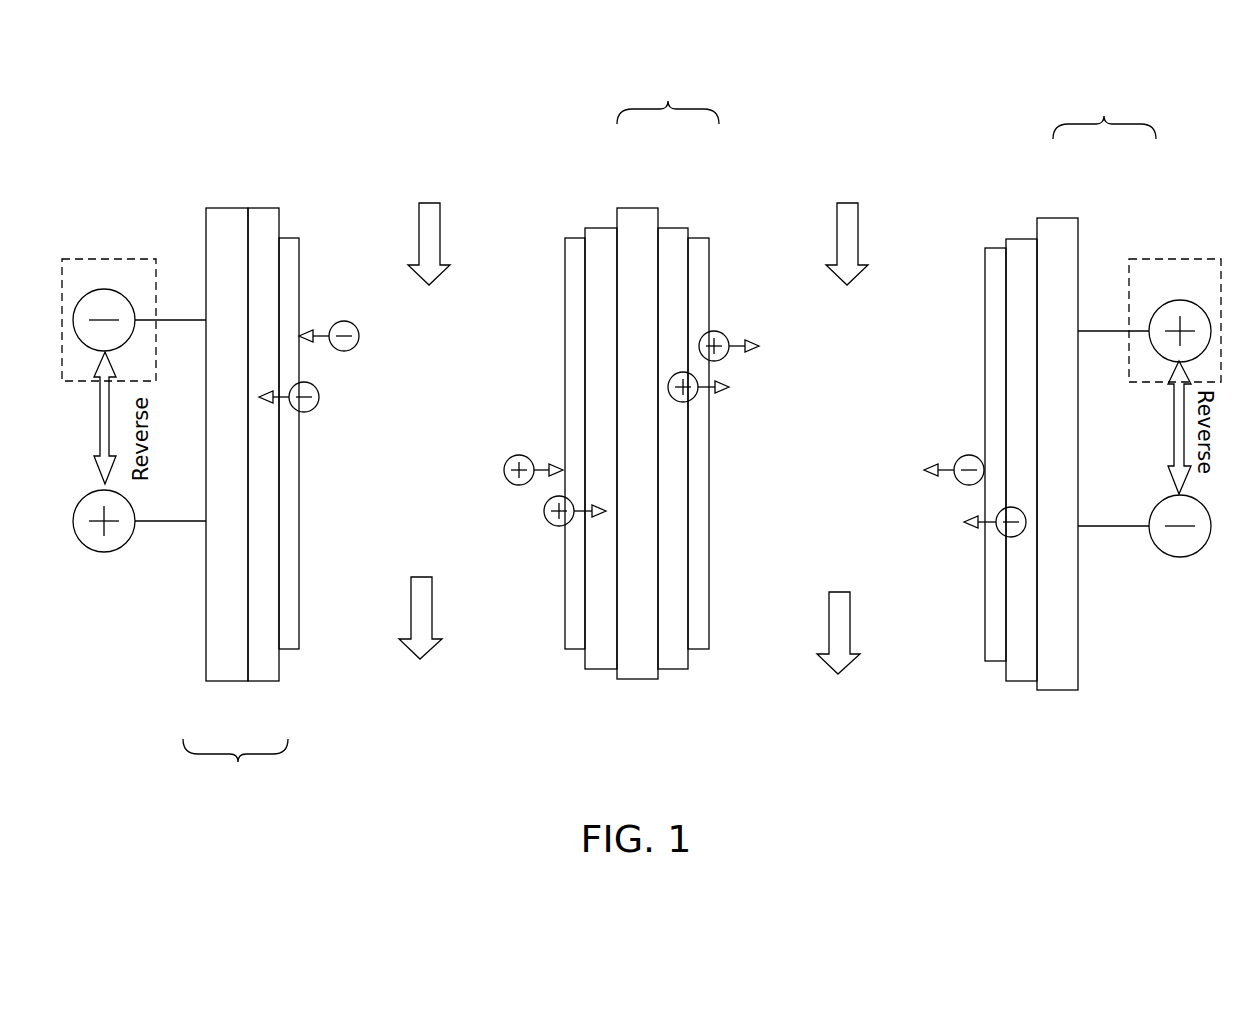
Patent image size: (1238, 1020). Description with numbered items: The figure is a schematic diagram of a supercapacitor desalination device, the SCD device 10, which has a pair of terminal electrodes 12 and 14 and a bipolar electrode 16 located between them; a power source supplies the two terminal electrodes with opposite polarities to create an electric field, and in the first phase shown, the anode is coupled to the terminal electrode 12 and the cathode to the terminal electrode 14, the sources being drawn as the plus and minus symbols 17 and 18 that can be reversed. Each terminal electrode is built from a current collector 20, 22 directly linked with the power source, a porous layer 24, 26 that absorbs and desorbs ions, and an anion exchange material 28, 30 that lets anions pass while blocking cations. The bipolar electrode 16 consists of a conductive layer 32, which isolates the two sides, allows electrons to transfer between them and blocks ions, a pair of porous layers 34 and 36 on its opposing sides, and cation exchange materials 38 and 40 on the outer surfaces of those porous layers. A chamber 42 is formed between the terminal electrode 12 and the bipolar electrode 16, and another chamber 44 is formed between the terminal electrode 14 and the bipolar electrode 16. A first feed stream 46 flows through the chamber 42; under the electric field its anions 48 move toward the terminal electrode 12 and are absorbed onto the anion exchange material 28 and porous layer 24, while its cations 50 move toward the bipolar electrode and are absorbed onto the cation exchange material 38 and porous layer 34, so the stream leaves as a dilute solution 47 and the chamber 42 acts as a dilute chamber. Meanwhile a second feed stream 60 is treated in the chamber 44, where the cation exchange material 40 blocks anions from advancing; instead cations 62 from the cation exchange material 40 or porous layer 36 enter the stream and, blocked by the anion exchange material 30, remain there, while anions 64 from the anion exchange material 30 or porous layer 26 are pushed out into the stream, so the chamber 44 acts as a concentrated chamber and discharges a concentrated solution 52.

The SCD device 10 is at (141, 53).
The terminal electrode 12 is at (235, 768).
The terminal electrode 14 is at (1104, 110).
The bipolar electrode 16 is at (668, 95).
The first power source 17 is at (100, 544).
The second power source 18 is at (1183, 549).
The current collector 20 is at (218, 658).
The current collector 22 is at (1053, 221).
The porous layer 24 is at (258, 658).
The porous layer 26 is at (1010, 241).
The anion exchange material 28 is at (283, 228).
The anion exchange material 30 is at (985, 644).
The conductive layer 32 is at (635, 213).
The porous layer 34 is at (590, 228).
The porous layer 36 is at (665, 231).
The cation exchange material 38 is at (563, 629).
The cation exchange material 40 is at (693, 626).
The chamber 42 is at (394, 411).
The chamber 44 is at (824, 411).
The first feed stream 46 is at (433, 200).
The dilute solution 47 is at (425, 641).
The anions 48 is at (298, 404).
The cations 50 is at (538, 514).
The concentrated solution 52 is at (843, 656).
The second feed stream 60 is at (851, 200).
The cations 62 is at (716, 323).
The anions 64 is at (961, 444).